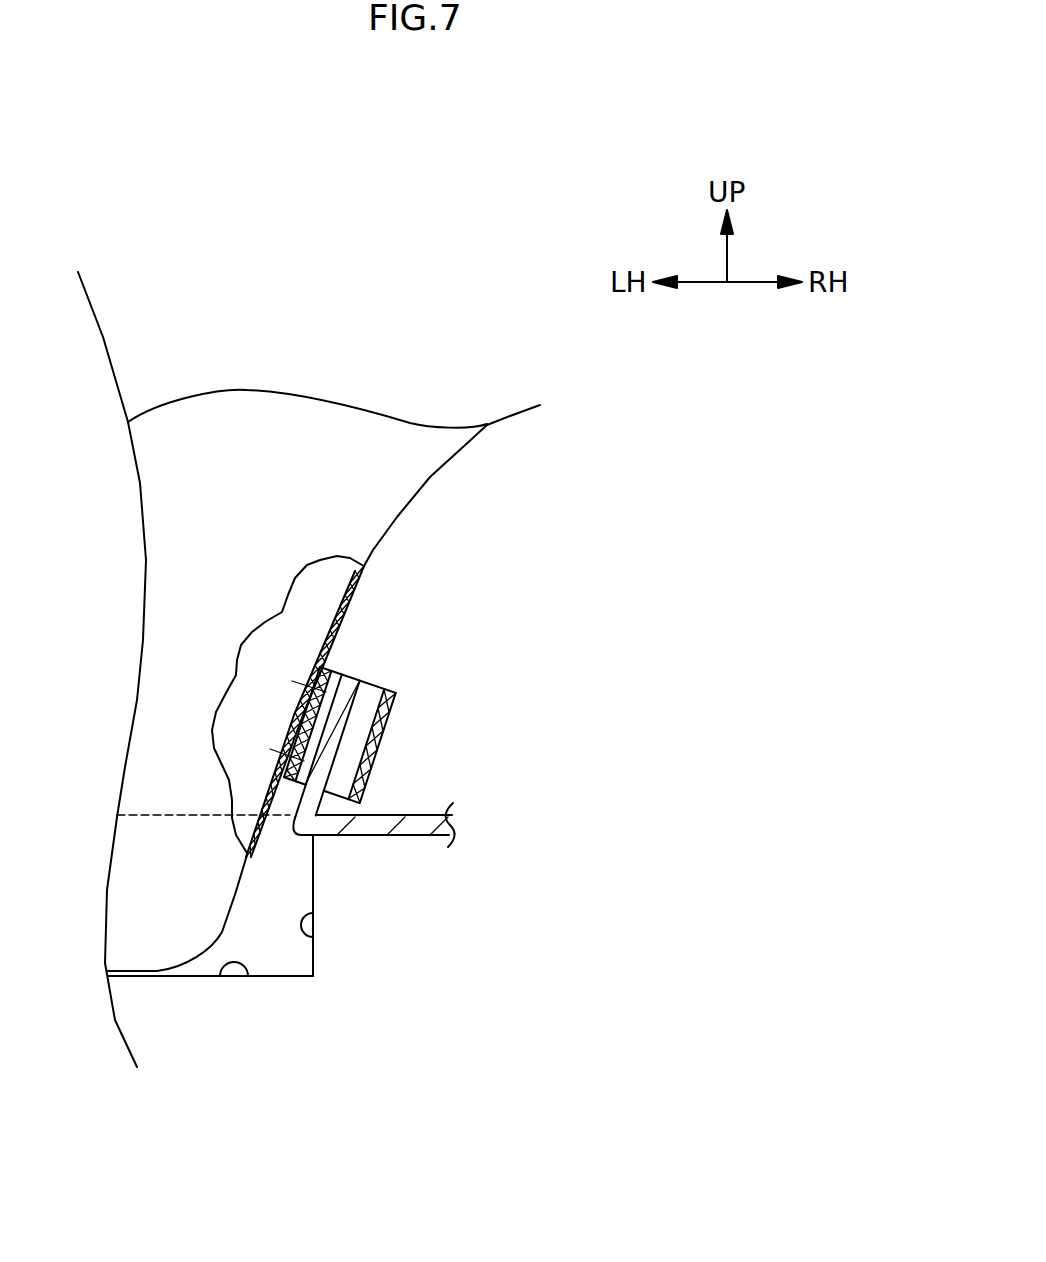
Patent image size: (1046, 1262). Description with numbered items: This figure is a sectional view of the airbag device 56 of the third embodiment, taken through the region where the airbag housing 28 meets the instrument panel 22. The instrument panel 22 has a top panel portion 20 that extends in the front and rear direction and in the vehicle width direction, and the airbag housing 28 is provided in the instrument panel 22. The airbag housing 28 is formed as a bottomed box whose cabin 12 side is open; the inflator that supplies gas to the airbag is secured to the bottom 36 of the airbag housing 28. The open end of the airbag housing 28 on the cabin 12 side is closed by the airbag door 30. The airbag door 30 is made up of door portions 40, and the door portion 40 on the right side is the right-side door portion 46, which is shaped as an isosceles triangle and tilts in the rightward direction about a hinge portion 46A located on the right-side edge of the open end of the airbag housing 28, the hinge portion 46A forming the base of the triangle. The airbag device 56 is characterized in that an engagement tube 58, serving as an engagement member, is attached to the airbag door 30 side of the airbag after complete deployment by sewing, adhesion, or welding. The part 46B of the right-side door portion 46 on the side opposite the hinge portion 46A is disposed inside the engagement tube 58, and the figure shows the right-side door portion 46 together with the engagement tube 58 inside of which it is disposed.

The cabin 12 is at (397, 350).
The airbag device 56 is at (253, 265).
The airbag housing 28 is at (313, 937).
The bottom 36 is at (247, 977).
The top panel portion 20 is at (539, 819).
The instrument panel 22 is at (403, 817).
The airbag door 30 is at (362, 717).
The right-side door portion 46 is at (514, 720).
The door portion 40 is at (426, 720).
The hinge portion 46A is at (286, 836).
The part of the right-side door portion 46B is at (352, 678).
The engagement tube 58 is at (380, 748).